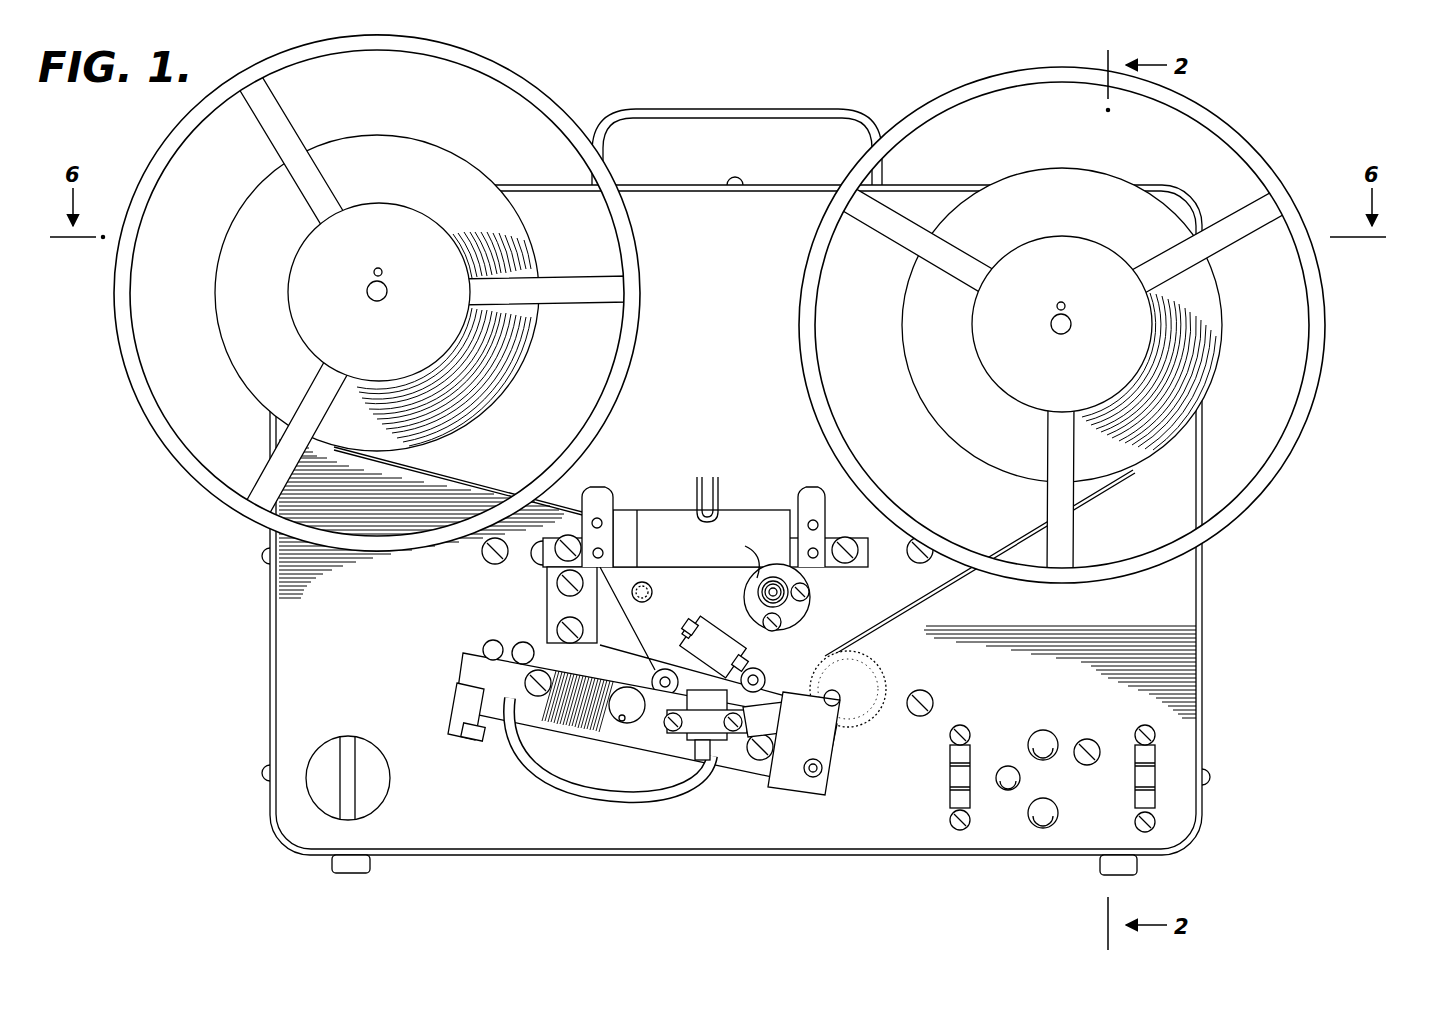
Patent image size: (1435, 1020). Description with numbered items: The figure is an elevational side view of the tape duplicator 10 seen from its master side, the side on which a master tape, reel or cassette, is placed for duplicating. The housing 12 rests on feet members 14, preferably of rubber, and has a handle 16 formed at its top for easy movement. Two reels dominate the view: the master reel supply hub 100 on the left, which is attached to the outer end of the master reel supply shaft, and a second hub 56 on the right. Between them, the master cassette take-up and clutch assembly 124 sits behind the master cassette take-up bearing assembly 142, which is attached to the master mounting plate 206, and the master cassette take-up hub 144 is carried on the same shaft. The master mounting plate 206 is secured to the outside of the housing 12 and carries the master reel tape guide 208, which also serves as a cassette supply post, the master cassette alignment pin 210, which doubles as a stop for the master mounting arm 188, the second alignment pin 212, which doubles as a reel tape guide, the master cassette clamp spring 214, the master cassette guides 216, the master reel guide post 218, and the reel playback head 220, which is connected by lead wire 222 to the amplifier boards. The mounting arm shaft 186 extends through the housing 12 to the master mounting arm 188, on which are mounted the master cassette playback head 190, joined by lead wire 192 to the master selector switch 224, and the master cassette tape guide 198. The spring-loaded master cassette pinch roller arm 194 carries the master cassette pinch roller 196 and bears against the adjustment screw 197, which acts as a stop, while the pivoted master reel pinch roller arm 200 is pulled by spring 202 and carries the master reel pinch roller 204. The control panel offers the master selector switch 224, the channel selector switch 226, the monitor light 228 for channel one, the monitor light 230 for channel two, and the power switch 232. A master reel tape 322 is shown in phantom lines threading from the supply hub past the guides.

The tape duplicator 10 is at (170, 723).
The housing 12 is at (1180, 607).
The feet members 14 is at (333, 866).
The handle 16 is at (722, 115).
The take-up reel hub 56 is at (1060, 334).
The master reel supply hub 100 is at (374, 300).
The master cassette take-up and clutch assembly 124 is at (789, 558).
The master cassette take-up bearing assembly 142 is at (810, 590).
The master cassette take-up hub 144 is at (808, 615).
The mounting arm shaft 186 is at (478, 668).
The master mounting arm 188 is at (543, 717).
The master cassette playback head 190 is at (623, 712).
The lead wire 192 is at (588, 786).
The master cassette pinch roller arm 194 is at (818, 745).
The master cassette pinch roller 196 is at (848, 722).
The adjustment screw 197 is at (768, 762).
The master cassette tape guide 198 is at (620, 724).
The master reel pinch roller arm 200 is at (830, 776).
The spring 202 is at (730, 777).
The master reel pinch roller 204 is at (868, 680).
The master mounting plate 206 is at (708, 600).
The master reel tape guide 208 is at (632, 595).
The master cassette alignment pin 210 is at (652, 680).
The master cassette alignment pin 212 is at (758, 670).
The master cassette clamp spring 214 is at (720, 495).
The master cassette guides 216 is at (598, 500).
The master reel guide post 218 is at (612, 510).
The reel playback head 220 is at (688, 649).
The lead wire 222 is at (733, 553).
The master selector switch 224 is at (380, 795).
The channel selector switch 226 is at (955, 773).
The monitor light 228 is at (1030, 740).
The monitor light 230 is at (1052, 812).
The power switch 232 is at (1150, 778).
The master reel tape 322 is at (452, 474).